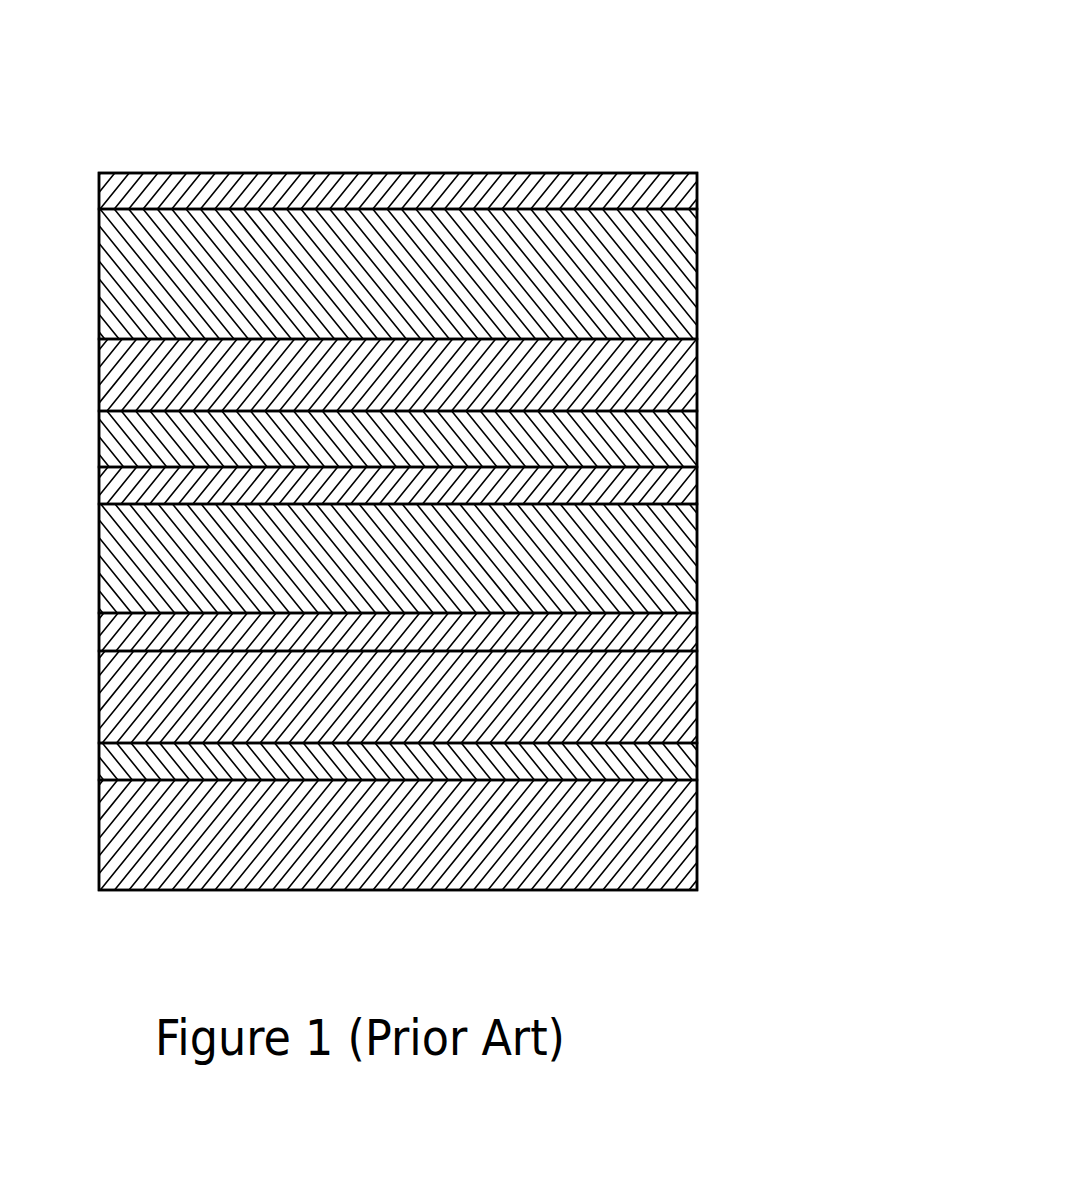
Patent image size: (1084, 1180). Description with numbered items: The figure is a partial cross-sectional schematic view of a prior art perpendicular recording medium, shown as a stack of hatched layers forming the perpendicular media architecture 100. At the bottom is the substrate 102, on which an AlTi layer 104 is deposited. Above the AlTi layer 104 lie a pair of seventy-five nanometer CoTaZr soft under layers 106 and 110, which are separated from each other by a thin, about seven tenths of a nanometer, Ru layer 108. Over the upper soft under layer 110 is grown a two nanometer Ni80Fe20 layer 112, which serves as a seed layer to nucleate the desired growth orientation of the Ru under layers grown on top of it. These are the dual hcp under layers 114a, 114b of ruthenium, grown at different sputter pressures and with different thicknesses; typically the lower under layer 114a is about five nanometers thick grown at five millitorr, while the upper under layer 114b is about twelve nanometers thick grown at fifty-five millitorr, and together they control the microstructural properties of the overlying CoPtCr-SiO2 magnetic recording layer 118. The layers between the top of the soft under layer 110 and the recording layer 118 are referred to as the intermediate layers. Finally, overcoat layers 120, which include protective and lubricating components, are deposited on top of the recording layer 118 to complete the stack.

The perpendicular media architecture 100 is at (622, 64).
The substrate 102 is at (423, 846).
The AlTi layer 104 is at (697, 761).
The soft under layer 106 is at (423, 708).
The Ru layer 108 is at (697, 632).
The soft under layer 110 is at (423, 570).
The Ni80Fe20 layer 112 is at (698, 485).
The hcp under layer 114a is at (429, 452).
The hcp under layer 114b is at (429, 387).
The magnetic recording layer 118 is at (423, 286).
The overcoat layers 120 is at (698, 192).